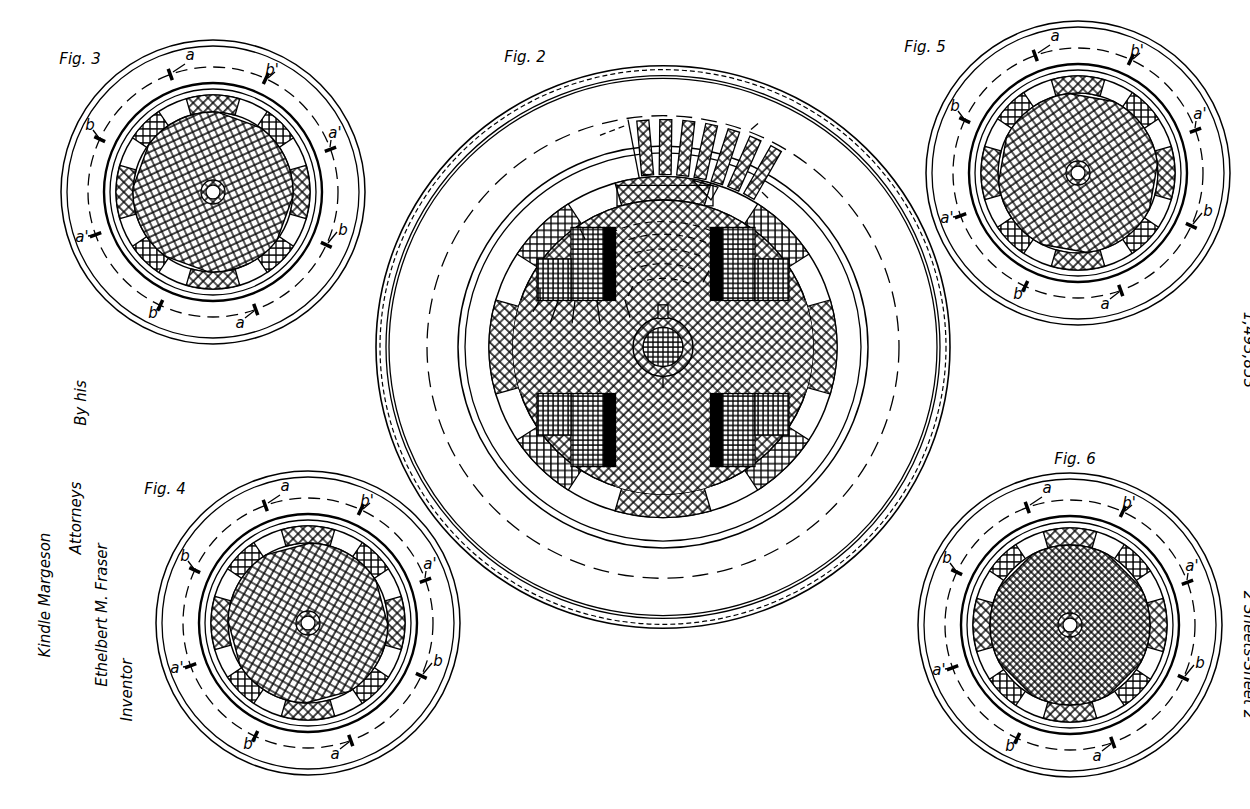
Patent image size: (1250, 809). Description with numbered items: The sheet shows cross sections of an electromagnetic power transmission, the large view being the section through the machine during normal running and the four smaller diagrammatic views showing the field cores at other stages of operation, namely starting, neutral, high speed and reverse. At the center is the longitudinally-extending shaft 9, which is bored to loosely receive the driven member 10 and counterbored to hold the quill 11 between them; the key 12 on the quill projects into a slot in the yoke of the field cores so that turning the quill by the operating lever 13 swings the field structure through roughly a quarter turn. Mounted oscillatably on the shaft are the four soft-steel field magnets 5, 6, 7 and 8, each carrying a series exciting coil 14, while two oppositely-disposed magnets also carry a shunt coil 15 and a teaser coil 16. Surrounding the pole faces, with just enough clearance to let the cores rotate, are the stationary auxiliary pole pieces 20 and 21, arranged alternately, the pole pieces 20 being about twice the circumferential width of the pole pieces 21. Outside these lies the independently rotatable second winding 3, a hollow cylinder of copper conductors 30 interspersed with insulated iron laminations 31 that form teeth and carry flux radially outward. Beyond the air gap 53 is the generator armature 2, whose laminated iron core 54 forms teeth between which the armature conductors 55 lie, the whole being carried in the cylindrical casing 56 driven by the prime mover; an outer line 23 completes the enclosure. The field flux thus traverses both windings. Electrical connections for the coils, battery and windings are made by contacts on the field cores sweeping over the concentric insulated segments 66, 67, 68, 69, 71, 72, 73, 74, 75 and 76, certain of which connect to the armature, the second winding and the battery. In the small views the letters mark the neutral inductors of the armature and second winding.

In FIG. 2, the generator armature 2 is at (663, 347).
In FIG. 2, the second winding 3 is at (663, 347).
In FIG. 2, the field magnet 5 is at (663, 347).
In FIG. 3, the field magnet 5 is at (213, 192).
In FIG. 4, the field magnet 5 is at (308, 623).
In FIG. 5, the field magnet 5 is at (1078, 173).
In FIG. 6, the field magnet 5 is at (1070, 625).
In FIG. 2, the field magnet 6 is at (762, 346).
In FIG. 2, the field magnet 7 is at (663, 444).
In FIG. 2, the field magnet 8 is at (564, 346).
In FIG. 2, the longitudinally-extending shaft 9 is at (680, 347).
In FIG. 2, the driven member 10 is at (706, 312).
In FIG. 2, the quill 11 is at (636, 346).
In FIG. 2, the key 12 is at (670, 296).
In FIG. 2, the operating lever 13 is at (693, 346).
In FIG. 2, the series exciting coil 14 is at (663, 346).
In FIG. 2, the shunt coil 15 is at (642, 366).
In FIG. 2, the teaser coil 16 is at (634, 350).
In FIG. 2, the stationary auxiliary pole piece 20 is at (677, 360).
In FIG. 3, the stationary auxiliary pole piece 20 is at (213, 209).
In FIG. 4, the stationary auxiliary pole piece 20 is at (308, 640).
In FIG. 5, the stationary auxiliary pole piece 20 is at (1078, 190).
In FIG. 6, the stationary auxiliary pole piece 20 is at (1070, 642).
In FIG. 2, the stationary auxiliary pole piece 21 is at (645, 353).
In FIG. 3, the stationary auxiliary pole piece 21 is at (215, 190).
In FIG. 4, the stationary auxiliary pole piece 21 is at (310, 621).
In FIG. 5, the stationary auxiliary pole piece 21 is at (1080, 171).
In FIG. 6, the stationary auxiliary pole piece 21 is at (1072, 623).
In FIG. 2, the outer casing 23 is at (663, 347).
In FIG. 2, the copper conductor 30 is at (789, 183).
In FIG. 2, the insulated iron lamination 31 is at (620, 172).
In FIG. 2, the air gap 53 is at (608, 154).
In FIG. 2, the laminated iron core 54 is at (763, 118).
In FIG. 2, the armature conductor 55 is at (709, 143).
In FIG. 2, the cylindrical casing 56 is at (663, 347).
In FIG. 2, the segment 66 is at (504, 293).
In FIG. 2, the segment 67 is at (560, 218).
In FIG. 2, the segment 68 is at (665, 193).
In FIG. 2, the segment 69 is at (530, 311).
In FIG. 2, the segment 71 is at (548, 319).
In FIG. 2, the segment 72 is at (699, 283).
In FIG. 2, the segment 73 is at (571, 319).
In FIG. 2, the segment 74 is at (599, 319).
In FIG. 2, the segment 75 is at (629, 315).
In FIG. 2, the segment 76 is at (624, 296).